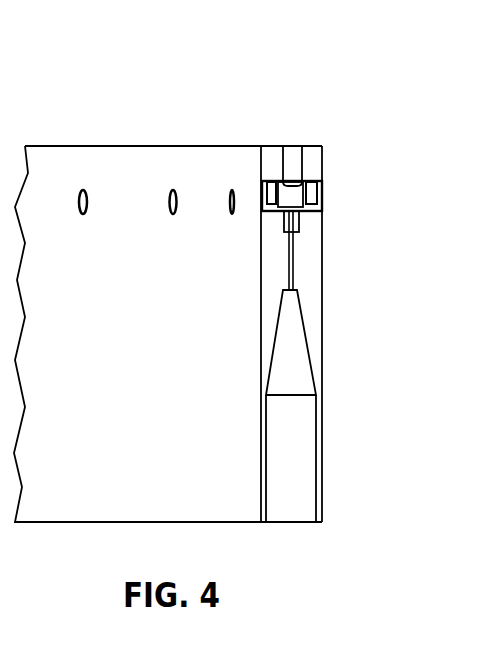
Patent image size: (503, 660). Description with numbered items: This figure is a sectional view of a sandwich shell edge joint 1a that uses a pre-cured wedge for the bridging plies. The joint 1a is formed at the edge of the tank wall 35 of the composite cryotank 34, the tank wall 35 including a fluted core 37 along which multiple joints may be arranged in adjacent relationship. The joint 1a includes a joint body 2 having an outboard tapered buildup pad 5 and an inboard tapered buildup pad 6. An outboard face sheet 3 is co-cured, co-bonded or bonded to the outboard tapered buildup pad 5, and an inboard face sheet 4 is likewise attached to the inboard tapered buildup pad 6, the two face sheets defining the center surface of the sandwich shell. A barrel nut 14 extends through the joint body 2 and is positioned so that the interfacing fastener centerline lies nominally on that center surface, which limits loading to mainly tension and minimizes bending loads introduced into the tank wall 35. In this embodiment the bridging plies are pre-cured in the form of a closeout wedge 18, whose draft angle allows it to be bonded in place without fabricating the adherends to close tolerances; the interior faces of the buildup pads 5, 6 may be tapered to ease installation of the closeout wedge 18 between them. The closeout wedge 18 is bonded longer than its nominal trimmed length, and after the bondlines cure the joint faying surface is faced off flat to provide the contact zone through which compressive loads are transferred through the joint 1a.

The composite cryotank 34 is at (146, 122).
The joint 1a is at (316, 124).
The outboard face sheet 3 is at (312, 158).
The inboard face sheet 4 is at (270, 157).
The joint body 2 is at (330, 172).
The barrel nut 14 is at (290, 198).
The inboard tapered buildup pad 6 is at (273, 254).
The closeout wedge 18 is at (294, 273).
The outboard tapered buildup pad 5 is at (313, 320).
The fluted core 37 is at (293, 438).
The tank wall 35 is at (322, 495).